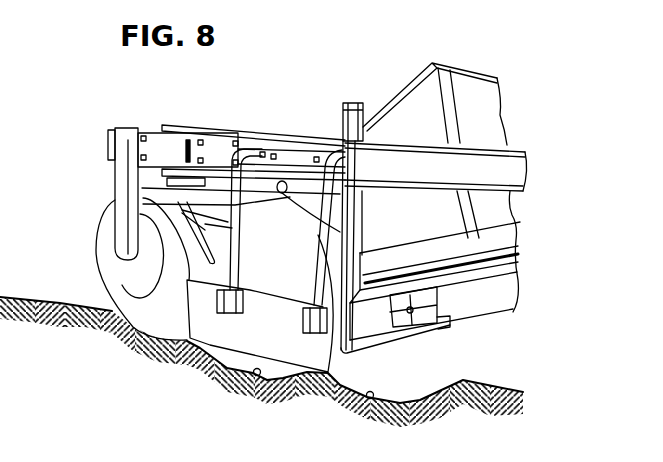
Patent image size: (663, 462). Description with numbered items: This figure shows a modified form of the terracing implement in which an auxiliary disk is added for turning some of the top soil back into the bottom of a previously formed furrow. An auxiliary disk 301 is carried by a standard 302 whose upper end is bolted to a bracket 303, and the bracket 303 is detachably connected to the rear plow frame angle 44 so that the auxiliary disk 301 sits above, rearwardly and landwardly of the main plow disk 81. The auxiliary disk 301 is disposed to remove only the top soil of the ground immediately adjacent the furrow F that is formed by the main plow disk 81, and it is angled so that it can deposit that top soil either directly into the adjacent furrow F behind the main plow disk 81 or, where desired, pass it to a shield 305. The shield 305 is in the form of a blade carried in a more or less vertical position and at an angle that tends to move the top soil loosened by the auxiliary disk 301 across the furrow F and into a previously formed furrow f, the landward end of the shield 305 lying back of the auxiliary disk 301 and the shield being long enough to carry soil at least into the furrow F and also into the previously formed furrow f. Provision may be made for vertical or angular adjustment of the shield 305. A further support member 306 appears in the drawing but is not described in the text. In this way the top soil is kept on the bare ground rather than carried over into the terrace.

The rear plow frame angle 44 is at (406, 155).
The main plow disk 81 is at (302, 248).
The auxiliary disk 301 is at (110, 263).
The standard 302 is at (123, 133).
The bracket 303 is at (158, 135).
The shield 305 is at (213, 338).
The bent tube support 306 is at (236, 234).
The furrow F is at (259, 375).
The previously formed furrow f is at (370, 398).